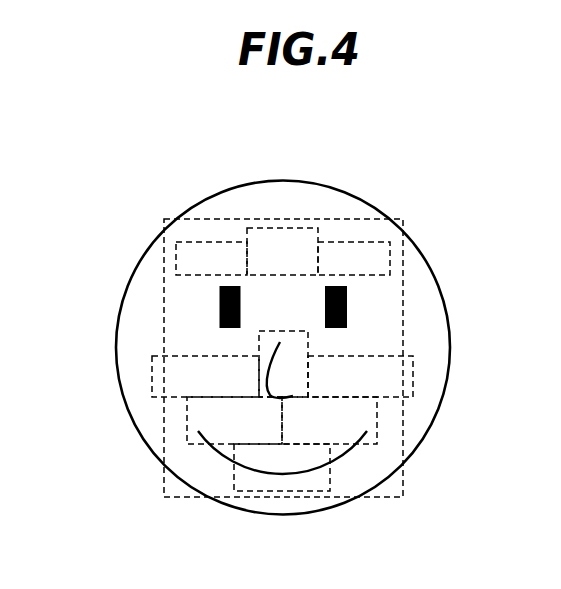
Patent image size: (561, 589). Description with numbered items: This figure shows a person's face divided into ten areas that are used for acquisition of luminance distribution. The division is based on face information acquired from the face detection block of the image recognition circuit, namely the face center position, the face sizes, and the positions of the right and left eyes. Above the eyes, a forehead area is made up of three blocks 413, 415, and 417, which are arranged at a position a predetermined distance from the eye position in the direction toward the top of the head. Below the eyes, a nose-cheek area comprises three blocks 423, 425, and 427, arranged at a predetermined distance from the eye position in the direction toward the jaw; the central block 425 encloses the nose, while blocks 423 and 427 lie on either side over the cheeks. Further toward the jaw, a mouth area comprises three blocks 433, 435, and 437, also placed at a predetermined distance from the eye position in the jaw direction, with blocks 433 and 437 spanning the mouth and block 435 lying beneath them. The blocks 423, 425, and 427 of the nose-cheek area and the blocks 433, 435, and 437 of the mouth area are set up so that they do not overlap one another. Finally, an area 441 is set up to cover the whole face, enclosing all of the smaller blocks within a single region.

The whole face area 441 is at (207, 217).
The forehead area block 413 is at (223, 252).
The forehead area block 415 is at (280, 237).
The forehead area block 417 is at (355, 252).
The nose-cheek area block 423 is at (157, 377).
The nose-cheek area block 425 is at (298, 347).
The nose-cheek area block 427 is at (408, 375).
The mouth area block 433 is at (196, 420).
The mouth area block 435 is at (290, 494).
The mouth area block 437 is at (368, 413).